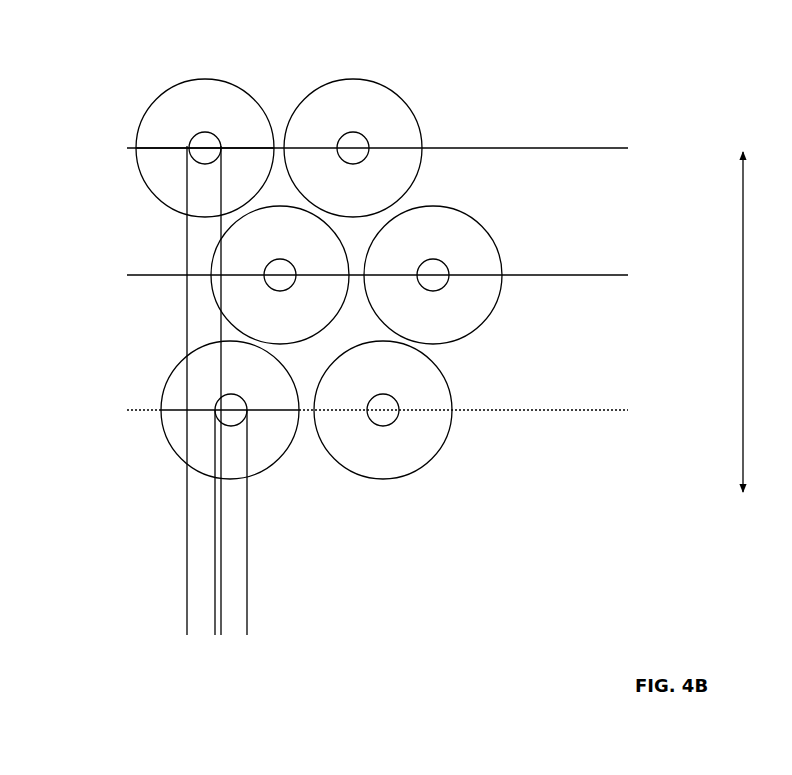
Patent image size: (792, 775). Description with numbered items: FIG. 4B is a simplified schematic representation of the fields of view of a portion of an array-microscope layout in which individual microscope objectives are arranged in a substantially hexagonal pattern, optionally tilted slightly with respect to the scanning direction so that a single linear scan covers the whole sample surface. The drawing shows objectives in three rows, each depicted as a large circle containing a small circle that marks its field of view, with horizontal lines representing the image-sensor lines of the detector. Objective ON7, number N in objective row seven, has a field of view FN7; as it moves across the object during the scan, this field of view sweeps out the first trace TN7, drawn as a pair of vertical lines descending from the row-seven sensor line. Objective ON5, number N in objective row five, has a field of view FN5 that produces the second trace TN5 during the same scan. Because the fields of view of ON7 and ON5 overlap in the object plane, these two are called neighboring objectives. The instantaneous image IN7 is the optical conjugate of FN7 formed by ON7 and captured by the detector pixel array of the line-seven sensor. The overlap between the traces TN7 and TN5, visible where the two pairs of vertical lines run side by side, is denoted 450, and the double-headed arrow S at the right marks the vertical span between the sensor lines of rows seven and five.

The overlap between traces 450 is at (215, 637).
The objective number N in objective row 7 ON7 is at (204, 60).
The field of view of objective ON7 FN7 is at (202, 138).
The instantaneous image produced by objective ON7 IN7 is at (135, 467).
The objective number N in objective row 5 ON5 is at (160, 348).
The field of view of objective ON5 FN5 is at (218, 419).
The first trace TN7 is at (200, 567).
The second trace TN5 is at (235, 543).
The spacing between image sensor lines S is at (759, 322).